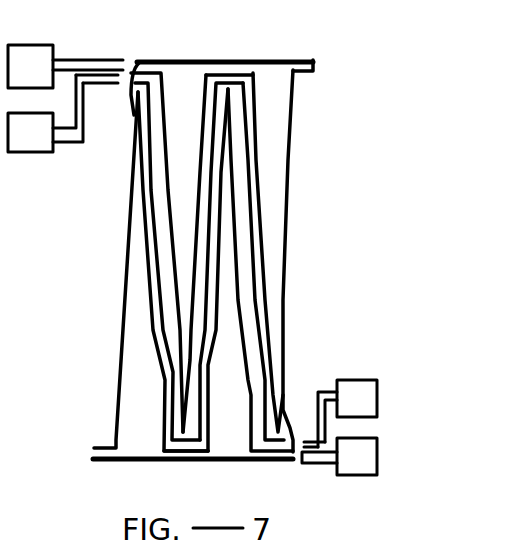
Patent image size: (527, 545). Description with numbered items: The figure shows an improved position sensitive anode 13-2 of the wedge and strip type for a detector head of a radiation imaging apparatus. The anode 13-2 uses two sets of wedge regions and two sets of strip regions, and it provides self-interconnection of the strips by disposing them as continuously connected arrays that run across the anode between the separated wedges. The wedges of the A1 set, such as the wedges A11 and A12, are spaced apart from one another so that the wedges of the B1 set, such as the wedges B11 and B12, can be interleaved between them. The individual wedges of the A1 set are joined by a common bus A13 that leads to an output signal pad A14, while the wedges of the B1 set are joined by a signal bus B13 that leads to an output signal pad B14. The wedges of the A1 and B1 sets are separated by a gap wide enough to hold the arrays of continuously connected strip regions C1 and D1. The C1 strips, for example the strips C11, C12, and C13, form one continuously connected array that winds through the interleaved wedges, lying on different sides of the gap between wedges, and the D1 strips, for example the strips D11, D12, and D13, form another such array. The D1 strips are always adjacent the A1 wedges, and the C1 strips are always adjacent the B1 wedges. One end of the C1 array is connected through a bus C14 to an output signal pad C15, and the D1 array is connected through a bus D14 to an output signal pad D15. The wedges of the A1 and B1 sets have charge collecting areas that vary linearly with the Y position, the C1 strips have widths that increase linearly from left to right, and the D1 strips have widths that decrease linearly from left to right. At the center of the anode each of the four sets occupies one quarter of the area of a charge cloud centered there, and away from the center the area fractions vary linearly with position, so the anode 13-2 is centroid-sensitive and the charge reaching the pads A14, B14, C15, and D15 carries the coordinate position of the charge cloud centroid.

The A1 set of wedges A1 is at (209, 57).
The wedge of the A1 set A11 is at (180, 84).
The wedge of the A1 set A12 is at (270, 85).
The common bus A13 is at (233, 60).
The output signal pad A14 is at (26, 52).
The B1 set of wedges B1 is at (192, 461).
The wedge of the B1 set B11 is at (135, 438).
The wedge of the B1 set B12 is at (232, 440).
The signal bus B13 is at (198, 455).
The output signal pad B14 is at (358, 466).
The C1 set of strips C1 is at (139, 173).
The C1 strip C11 is at (148, 197).
The C1 strip C12 is at (238, 297).
The C1 strip C13 is at (248, 275).
The bus C14 is at (337, 391).
The output signal pad C15 is at (360, 385).
The D1 set of strips D1 is at (160, 234).
The D1 strip D11 is at (162, 260).
The D1 strip D12 is at (205, 185).
The D1 strip D13 is at (258, 211).
The bus D14 is at (107, 85).
The output signal pad D15 is at (43, 143).
The anode 13-2 is at (334, 247).